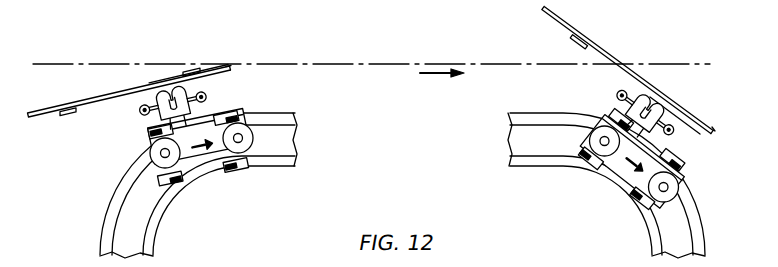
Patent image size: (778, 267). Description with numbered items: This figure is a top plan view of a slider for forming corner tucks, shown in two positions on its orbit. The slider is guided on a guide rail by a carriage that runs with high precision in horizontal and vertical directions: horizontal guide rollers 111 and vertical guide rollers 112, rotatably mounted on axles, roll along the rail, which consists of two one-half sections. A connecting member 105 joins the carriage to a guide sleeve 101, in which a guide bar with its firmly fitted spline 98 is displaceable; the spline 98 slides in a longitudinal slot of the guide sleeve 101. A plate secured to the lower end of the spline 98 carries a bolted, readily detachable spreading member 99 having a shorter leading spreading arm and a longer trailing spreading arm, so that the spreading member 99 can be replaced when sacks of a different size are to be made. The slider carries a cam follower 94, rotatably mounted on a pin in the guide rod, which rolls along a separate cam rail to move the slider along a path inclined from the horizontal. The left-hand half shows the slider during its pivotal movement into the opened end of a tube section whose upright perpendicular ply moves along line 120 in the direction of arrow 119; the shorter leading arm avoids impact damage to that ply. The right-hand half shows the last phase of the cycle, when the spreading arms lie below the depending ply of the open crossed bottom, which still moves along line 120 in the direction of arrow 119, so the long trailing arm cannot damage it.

The cam follower 94 is at (160, 116).
The spline 98 is at (172, 91).
The spreading member 99 is at (159, 90).
The guide sleeve 101 is at (158, 96).
The connecting member 105 is at (200, 122).
The horizontal guide rollers 111 is at (252, 142).
The vertical guide rollers 112 is at (240, 118).
The arrow 119 is at (436, 76).
The line 120 is at (368, 66).